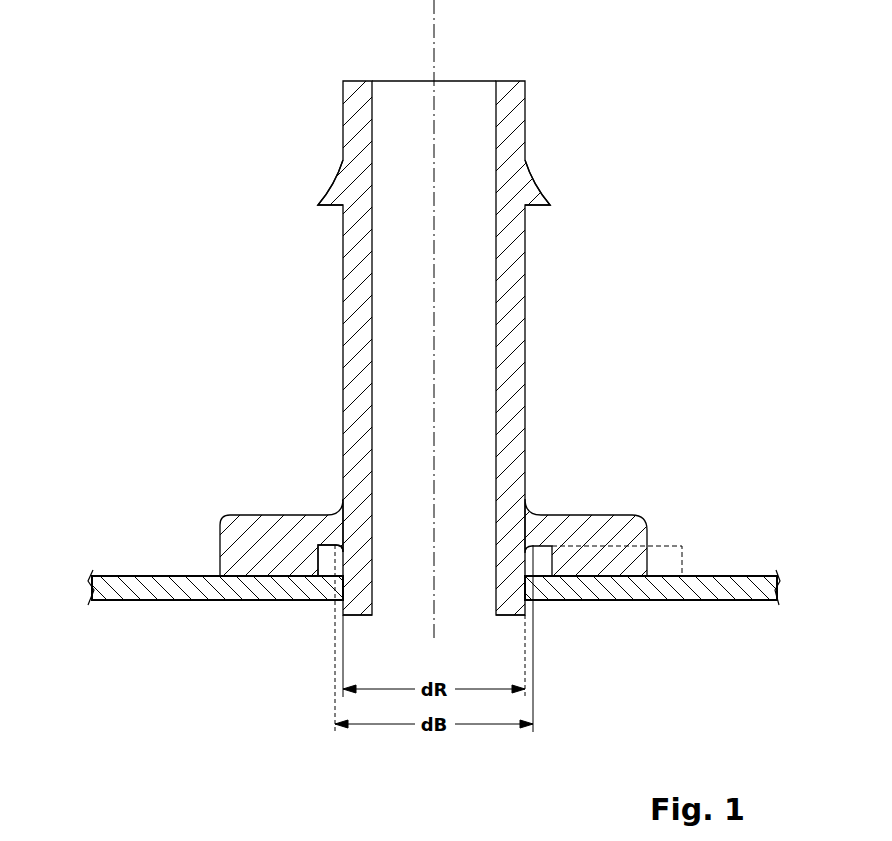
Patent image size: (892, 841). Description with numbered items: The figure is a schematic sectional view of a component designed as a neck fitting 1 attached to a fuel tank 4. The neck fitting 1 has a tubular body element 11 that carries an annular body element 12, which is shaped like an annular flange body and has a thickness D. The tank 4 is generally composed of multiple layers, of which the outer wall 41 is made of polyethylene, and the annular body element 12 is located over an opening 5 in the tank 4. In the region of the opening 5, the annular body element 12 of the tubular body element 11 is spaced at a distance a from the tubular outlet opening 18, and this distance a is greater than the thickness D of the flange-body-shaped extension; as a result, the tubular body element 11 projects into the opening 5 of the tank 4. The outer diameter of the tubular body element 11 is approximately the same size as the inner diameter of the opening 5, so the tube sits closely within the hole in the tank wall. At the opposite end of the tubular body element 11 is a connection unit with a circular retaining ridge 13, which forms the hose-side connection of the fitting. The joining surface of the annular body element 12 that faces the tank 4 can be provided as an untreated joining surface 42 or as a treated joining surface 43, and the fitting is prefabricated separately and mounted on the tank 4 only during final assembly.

The neck fitting 1 is at (598, 140).
The tubular body element 11 is at (343, 333).
The annular body element 12 is at (263, 522).
The circular retaining ridge 13 is at (332, 193).
The tubular outlet opening 18 is at (410, 618).
The opening 5 is at (532, 617).
The distance a is at (313, 583).
The untreated joining surface 42 is at (627, 513).
The treated joining surface 43 is at (645, 597).
The tank 4 is at (733, 606).
The outer wall 41 is at (745, 575).
The thickness D is at (685, 556).